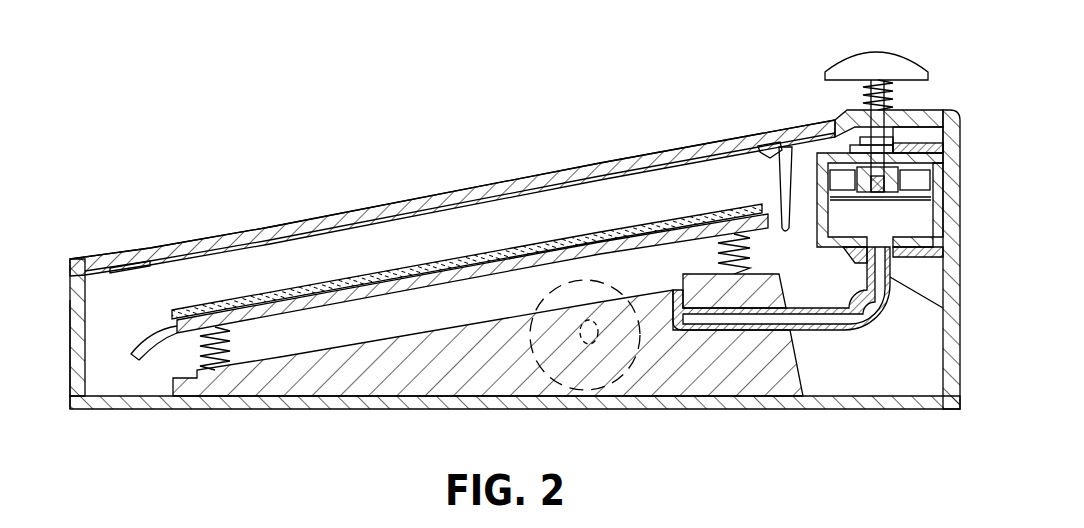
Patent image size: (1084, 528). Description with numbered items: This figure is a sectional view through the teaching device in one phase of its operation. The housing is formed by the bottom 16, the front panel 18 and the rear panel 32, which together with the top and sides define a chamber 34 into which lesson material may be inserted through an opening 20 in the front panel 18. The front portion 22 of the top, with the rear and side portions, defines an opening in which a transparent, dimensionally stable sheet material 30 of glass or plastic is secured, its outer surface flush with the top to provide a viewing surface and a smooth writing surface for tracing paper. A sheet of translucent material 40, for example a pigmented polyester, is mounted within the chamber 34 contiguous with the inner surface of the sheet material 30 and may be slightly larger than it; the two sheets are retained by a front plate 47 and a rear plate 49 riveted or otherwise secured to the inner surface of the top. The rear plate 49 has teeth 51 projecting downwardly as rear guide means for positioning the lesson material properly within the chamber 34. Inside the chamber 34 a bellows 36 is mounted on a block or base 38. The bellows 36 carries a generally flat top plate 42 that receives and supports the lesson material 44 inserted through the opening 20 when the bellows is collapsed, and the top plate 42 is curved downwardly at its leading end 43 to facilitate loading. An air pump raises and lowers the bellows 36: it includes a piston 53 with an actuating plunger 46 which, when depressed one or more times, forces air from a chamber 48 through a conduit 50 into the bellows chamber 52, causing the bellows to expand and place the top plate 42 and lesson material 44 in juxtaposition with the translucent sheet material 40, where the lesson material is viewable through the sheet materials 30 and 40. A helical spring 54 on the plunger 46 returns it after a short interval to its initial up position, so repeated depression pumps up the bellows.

The bottom 16 is at (362, 405).
The front panel 18 is at (72, 375).
The opening 20 is at (76, 299).
The front portion 22 is at (113, 258).
The transparent dimensionally stable sheet material 30 is at (393, 203).
The rear panel 32 is at (958, 382).
The chamber 34 is at (850, 388).
The bellows 36 is at (200, 349).
The block or base 38 is at (700, 382).
The translucent sheet material 40 is at (484, 190).
The top plate 42 is at (388, 285).
The leading end 43 is at (140, 344).
The lesson material 44 is at (597, 237).
The actuating plunger 46 is at (880, 56).
The front plate 47 is at (148, 272).
The chamber 48 is at (864, 232).
The rear plate 49 is at (766, 158).
The conduit 50 is at (878, 318).
The teeth 51 is at (779, 192).
The bellows chamber 52 is at (460, 309).
The piston 53 is at (913, 190).
The helical spring 54 is at (863, 91).